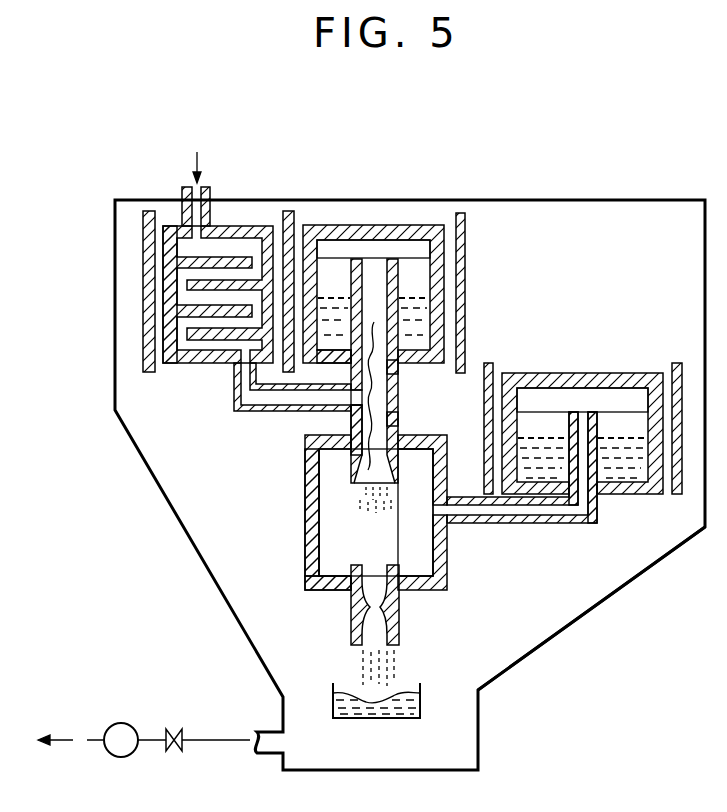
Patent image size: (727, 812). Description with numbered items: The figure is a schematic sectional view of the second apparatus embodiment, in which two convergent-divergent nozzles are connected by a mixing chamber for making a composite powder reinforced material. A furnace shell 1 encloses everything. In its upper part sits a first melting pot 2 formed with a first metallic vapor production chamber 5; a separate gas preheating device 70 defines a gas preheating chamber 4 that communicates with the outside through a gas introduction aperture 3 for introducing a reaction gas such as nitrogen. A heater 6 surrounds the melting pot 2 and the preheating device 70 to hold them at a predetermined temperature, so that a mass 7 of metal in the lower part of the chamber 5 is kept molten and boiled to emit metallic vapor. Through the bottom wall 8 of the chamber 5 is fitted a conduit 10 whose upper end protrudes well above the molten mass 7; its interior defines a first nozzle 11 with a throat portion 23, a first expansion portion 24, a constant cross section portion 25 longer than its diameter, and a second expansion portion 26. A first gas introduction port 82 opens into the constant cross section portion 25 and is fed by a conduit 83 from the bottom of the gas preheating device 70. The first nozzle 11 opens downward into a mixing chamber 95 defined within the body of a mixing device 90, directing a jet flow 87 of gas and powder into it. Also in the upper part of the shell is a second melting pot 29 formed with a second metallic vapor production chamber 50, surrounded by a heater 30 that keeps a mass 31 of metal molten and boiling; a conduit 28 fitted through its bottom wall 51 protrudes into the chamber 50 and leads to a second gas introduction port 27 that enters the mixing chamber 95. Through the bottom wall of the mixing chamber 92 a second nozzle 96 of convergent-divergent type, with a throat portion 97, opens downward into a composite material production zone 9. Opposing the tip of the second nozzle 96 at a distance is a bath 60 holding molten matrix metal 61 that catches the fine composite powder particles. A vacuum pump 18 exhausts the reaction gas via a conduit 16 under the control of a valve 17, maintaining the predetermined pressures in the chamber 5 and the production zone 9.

The furnace shell 1 is at (682, 200).
The first melting pot 2 is at (378, 225).
The gas introduction aperture 3 is at (190, 184).
The gas preheating chamber 4 is at (245, 247).
The first metallic vapor production chamber 5 is at (421, 225).
The heater 6 is at (148, 211).
The mass of metal 7 is at (425, 318).
The bottom wall 8 is at (334, 352).
The composite material production zone 9 is at (443, 665).
The conduit 10 is at (353, 271).
The first nozzle 11 is at (350, 418).
The conduit 16 is at (223, 740).
The valve 17 is at (174, 729).
The vacuum pump 18 is at (121, 723).
The throat portion 23 is at (375, 383).
The first expansion portion 24 is at (395, 367).
The constant cross section portion 25 is at (393, 420).
The second expansion portion 26 is at (388, 465).
The second gas introduction port 27 is at (432, 510).
The conduit 28 is at (556, 523).
The second melting pot 29 is at (583, 373).
The heater 30 is at (489, 363).
The mass of metal 31 is at (636, 470).
The second metallic vapor production chamber 50 is at (620, 400).
The bottom wall 51 is at (608, 492).
The bath 60 is at (390, 718).
The molten matrix metal 61 is at (420, 702).
The gas preheating device 70 is at (167, 283).
The first gas introduction port 82 is at (362, 392).
The conduit 83 is at (234, 397).
The jet flow 87 is at (358, 502).
The mixing device 90 is at (447, 561).
The bottom wall of the mixing chamber 92 is at (331, 589).
The mixing chamber 95 is at (332, 514).
The second nozzle 96 is at (376, 512).
The throat portion 97 is at (399, 624).